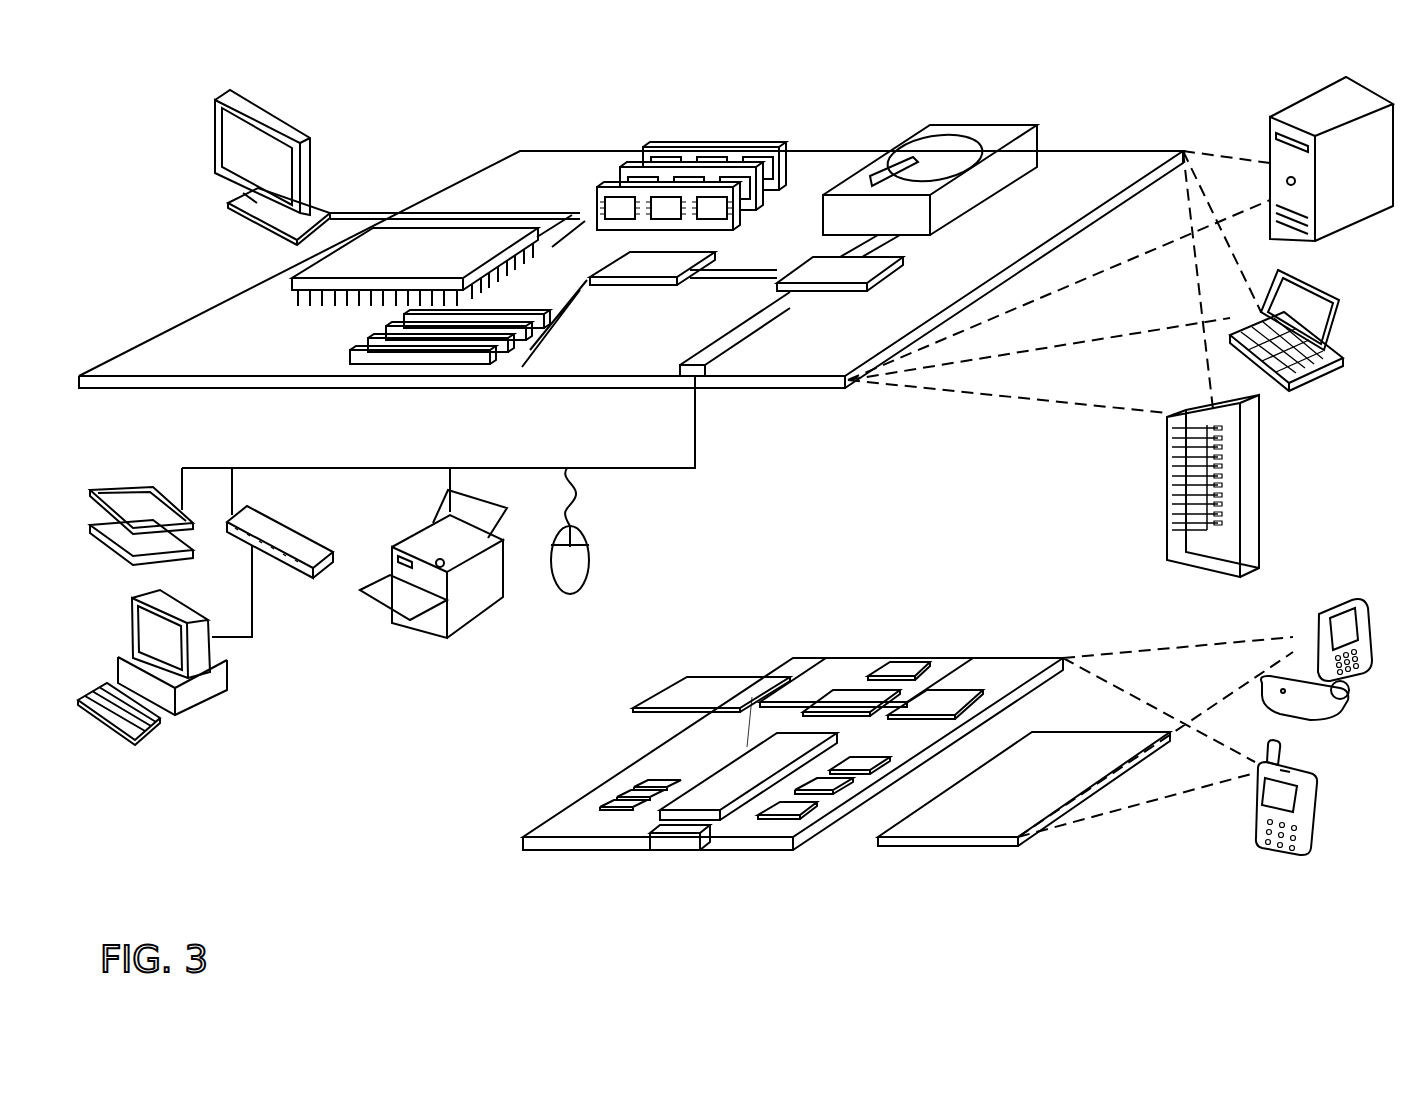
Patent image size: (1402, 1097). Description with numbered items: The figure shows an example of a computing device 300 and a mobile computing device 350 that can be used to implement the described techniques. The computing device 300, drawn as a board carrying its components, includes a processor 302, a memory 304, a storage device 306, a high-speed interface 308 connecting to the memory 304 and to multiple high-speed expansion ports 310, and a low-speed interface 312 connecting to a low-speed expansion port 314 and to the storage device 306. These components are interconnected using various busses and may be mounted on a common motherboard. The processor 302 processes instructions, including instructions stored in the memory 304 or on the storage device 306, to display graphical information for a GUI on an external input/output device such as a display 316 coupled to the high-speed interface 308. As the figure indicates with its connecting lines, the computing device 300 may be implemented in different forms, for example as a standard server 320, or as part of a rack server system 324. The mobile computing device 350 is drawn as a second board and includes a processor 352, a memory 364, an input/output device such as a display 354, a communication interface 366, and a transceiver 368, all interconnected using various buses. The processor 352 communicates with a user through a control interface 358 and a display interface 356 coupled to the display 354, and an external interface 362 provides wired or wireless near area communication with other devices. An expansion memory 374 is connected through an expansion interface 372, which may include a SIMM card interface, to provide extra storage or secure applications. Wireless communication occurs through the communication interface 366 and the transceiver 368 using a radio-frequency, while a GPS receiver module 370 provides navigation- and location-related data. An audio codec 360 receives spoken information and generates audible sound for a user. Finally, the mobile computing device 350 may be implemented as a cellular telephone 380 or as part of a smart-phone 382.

The computing device 300 is at (436, 122).
The processor 302 is at (290, 284).
The memory 304 is at (658, 149).
The storage device 306 is at (925, 133).
The high-speed interface 308 is at (628, 262).
The high-speed expansion ports 310 is at (357, 347).
The low-speed interface 312 is at (815, 268).
The low-speed expansion port 314 is at (700, 376).
The display 316 is at (217, 100).
The standard server 320 is at (1270, 136).
The rack server system 324 is at (1167, 510).
The mobile computing device 350 is at (462, 847).
The processor 352 is at (720, 810).
The display 354 is at (982, 830).
The display interface 356 is at (793, 813).
The control interface 358 is at (833, 780).
The audio codec 360 is at (860, 762).
The external interface 362 is at (679, 840).
The memory 364 is at (612, 795).
The communication interface 366 is at (852, 698).
The transceiver 368 is at (938, 700).
The GPS receiver module 370 is at (905, 660).
The expansion interface 372 is at (773, 670).
The expansion memory 374 is at (682, 676).
The cellular telephone 380 is at (1325, 615).
The smart-phone 382 is at (1255, 798).